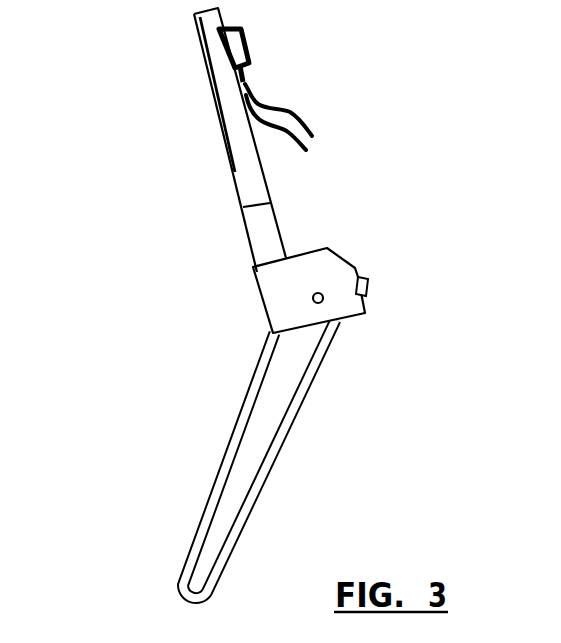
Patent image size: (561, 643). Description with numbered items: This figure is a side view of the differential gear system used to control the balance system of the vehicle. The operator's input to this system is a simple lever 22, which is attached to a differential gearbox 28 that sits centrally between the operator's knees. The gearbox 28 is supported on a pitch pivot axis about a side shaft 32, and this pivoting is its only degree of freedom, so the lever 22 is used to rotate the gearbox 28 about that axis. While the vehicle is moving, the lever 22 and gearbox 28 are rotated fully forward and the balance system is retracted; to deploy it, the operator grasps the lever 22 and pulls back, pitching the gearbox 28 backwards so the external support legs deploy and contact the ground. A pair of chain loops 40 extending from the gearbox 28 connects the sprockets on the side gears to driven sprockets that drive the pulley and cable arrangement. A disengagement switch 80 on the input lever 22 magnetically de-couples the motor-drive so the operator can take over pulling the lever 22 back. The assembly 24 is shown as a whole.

The lever 22 is at (243, 175).
The clamp arm assembly 24 is at (231, 303).
The differential gearbox 28 is at (273, 307).
The side shaft 32 is at (320, 292).
The chain loops 40 is at (283, 447).
The disengagement switch 80 is at (243, 31).